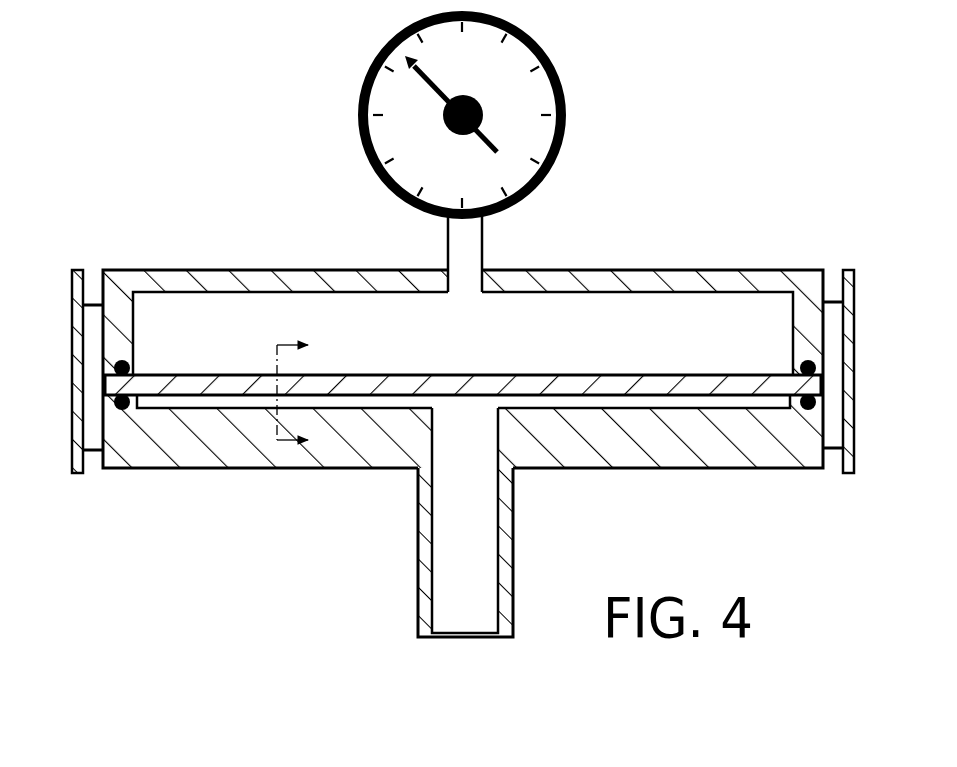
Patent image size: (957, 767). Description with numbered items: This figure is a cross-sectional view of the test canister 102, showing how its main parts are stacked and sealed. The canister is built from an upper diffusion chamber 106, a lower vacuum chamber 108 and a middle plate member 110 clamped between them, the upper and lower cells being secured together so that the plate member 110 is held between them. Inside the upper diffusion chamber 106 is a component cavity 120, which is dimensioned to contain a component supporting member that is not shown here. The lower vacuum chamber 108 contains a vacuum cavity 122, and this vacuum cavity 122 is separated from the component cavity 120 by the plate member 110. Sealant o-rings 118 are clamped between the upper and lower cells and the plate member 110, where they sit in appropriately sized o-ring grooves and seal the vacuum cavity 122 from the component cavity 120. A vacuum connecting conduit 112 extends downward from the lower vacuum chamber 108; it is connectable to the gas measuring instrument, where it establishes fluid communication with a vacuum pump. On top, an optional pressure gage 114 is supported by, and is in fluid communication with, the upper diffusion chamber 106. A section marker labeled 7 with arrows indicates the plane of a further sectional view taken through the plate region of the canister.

The test canister 102 is at (136, 195).
The upper diffusion chamber 106 is at (738, 270).
The lower vacuum chamber 108 is at (738, 470).
The middle plate member 110 is at (465, 375).
The vacuum connecting conduit 112 is at (483, 552).
The pressure gage 114 is at (563, 72).
The sealant o-rings 118 is at (128, 364).
The component cavity 120 is at (228, 312).
The vacuum cavity 122 is at (236, 402).
The section line 7 is at (309, 393).